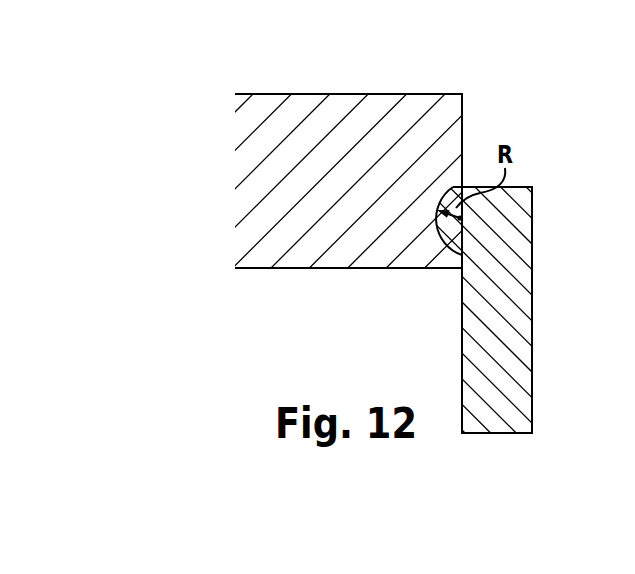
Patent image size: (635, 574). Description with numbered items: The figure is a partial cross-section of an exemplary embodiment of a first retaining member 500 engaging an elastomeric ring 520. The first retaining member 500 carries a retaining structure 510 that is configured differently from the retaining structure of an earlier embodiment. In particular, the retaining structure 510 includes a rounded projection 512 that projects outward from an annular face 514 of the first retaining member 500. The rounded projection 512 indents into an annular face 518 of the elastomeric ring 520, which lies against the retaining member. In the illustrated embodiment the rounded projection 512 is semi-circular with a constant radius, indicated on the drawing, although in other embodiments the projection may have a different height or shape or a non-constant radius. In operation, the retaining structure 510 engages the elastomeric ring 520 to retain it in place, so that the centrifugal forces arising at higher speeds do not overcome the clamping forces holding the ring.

The first retaining member 500 is at (513, 287).
The retaining structure 510 is at (410, 200).
The rounded projection 512 is at (433, 222).
The annular face 514 is at (463, 258).
The annular face 518 is at (462, 115).
The elastomeric ring 520 is at (380, 107).